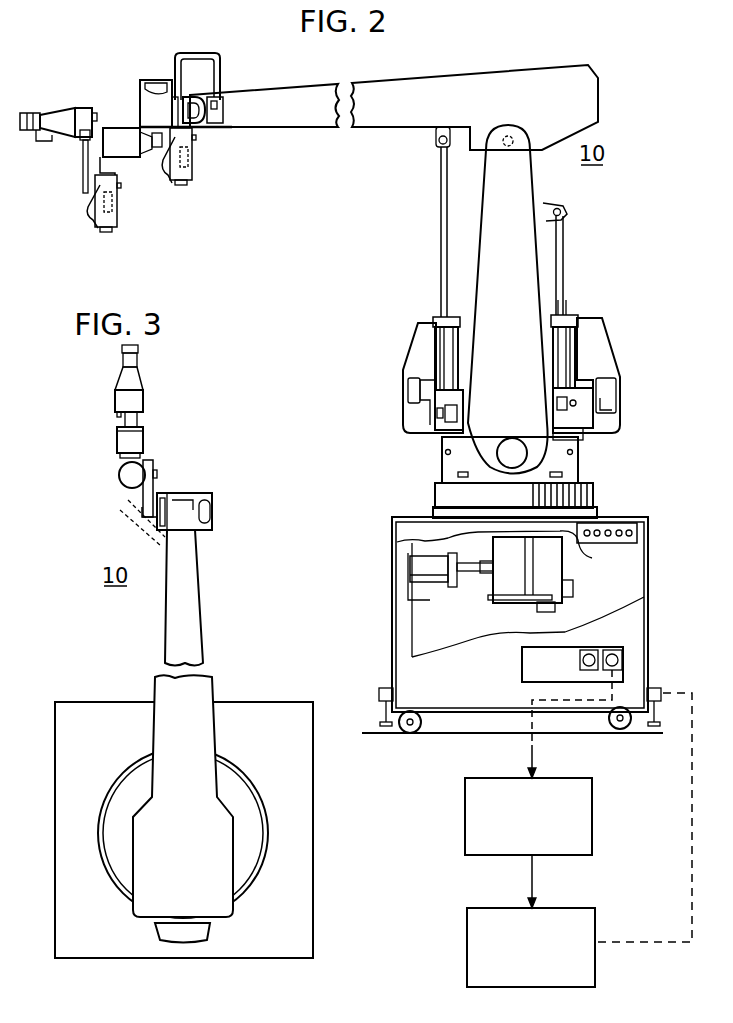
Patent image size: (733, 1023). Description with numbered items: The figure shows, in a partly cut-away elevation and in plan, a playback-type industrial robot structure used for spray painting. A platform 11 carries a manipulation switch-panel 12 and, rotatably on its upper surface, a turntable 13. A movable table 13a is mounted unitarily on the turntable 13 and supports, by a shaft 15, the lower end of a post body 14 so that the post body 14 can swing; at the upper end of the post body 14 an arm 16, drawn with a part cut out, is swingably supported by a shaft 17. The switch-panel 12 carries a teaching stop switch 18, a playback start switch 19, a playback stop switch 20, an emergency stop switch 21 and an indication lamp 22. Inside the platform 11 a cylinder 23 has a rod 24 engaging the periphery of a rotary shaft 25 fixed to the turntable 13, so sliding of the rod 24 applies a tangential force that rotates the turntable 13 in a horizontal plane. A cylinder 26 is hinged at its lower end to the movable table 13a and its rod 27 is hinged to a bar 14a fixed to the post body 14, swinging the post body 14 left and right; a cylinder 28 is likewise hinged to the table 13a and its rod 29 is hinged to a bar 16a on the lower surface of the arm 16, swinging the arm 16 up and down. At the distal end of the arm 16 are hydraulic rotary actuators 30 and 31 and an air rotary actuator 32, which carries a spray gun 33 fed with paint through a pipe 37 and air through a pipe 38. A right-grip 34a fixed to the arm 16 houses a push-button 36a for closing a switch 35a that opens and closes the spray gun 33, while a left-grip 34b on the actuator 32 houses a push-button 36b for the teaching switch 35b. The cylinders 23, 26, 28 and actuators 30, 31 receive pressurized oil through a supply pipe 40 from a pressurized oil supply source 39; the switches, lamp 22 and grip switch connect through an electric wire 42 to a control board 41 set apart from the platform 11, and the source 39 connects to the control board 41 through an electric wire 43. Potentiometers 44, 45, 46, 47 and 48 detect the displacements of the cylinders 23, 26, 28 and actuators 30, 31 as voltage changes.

In FIG. 2, the platform 11 is at (391, 536).
In FIG. 3, the platform 11 is at (268, 702).
In FIG. 2, the manipulation switch-panel 12 is at (637, 522).
In FIG. 2, the turntable 13 is at (437, 496).
In FIG. 3, the turntable 13 is at (247, 860).
In FIG. 2, the movable table 13a is at (445, 463).
In FIG. 2, the post body 14 is at (523, 182).
In FIG. 2, the bar 14a is at (561, 214).
In FIG. 2, the shaft 15 is at (513, 438).
In FIG. 2, the arm 16 is at (336, 82).
In FIG. 3, the arm 16 is at (195, 573).
In FIG. 2, the bar 16a is at (436, 138).
In FIG. 2, the shaft 17 is at (506, 134).
In FIG. 2, the teaching stop switch 18 is at (587, 537).
In FIG. 2, the playback start switch 19 is at (597, 537).
In FIG. 2, the playback stop switch 20 is at (608, 529).
In FIG. 2, the emergency stop switch 21 is at (620, 529).
In FIG. 2, the indication lamp 22 is at (633, 533).
In FIG. 2, the cylinder 23 is at (422, 567).
In FIG. 2, the rod 24 is at (468, 573).
In FIG. 2, the rotary shaft 25 is at (508, 585).
In FIG. 2, the cylinder 26 is at (567, 353).
In FIG. 2, the rod 27 is at (564, 268).
In FIG. 2, the cylinder 28 is at (450, 355).
In FIG. 2, the rod 29 is at (443, 197).
In FIG. 2, the hydraulic rotary actuator 30 is at (200, 100).
In FIG. 3, the hydraulic rotary actuator 30 is at (198, 497).
In FIG. 2, the hydraulic rotary actuator 31 is at (140, 97).
In FIG. 3, the hydraulic rotary actuator 31 is at (123, 473).
In FIG. 2, the air rotary actuator 32 is at (124, 151).
In FIG. 3, the air rotary actuator 32 is at (145, 440).
In FIG. 2, the spray gun 33 is at (60, 108).
In FIG. 3, the spray gun 33 is at (137, 380).
In FIG. 2, the right-grip 34a is at (195, 145).
In FIG. 2, the left-grip 34b is at (117, 231).
In FIG. 2, the switch 35a is at (197, 172).
In FIG. 2, the clamp pin 35b is at (123, 210).
In FIG. 2, the push-button 36a is at (165, 172).
In FIG. 2, the push-button 36b is at (97, 217).
In FIG. 2, the pipe 37 is at (81, 184).
In FIG. 2, the pipe 38 is at (49, 142).
In FIG. 2, the pressurized oil supply source 39 is at (480, 908).
In FIG. 2, the supply pipe 40 is at (636, 943).
In FIG. 2, the control board 41 is at (593, 793).
In FIG. 2, the electric wire 42 is at (535, 740).
In FIG. 2, the electric wire 43 is at (533, 880).
In FIG. 2, the potentiometer 44 is at (572, 664).
In FIG. 2, the potentiometer 45 is at (557, 402).
In FIG. 2, the potentiometer 46 is at (452, 423).
In FIG. 3, the potentiometer 47 is at (212, 510).
In FIG. 2, the potentiometer 48 is at (152, 85).